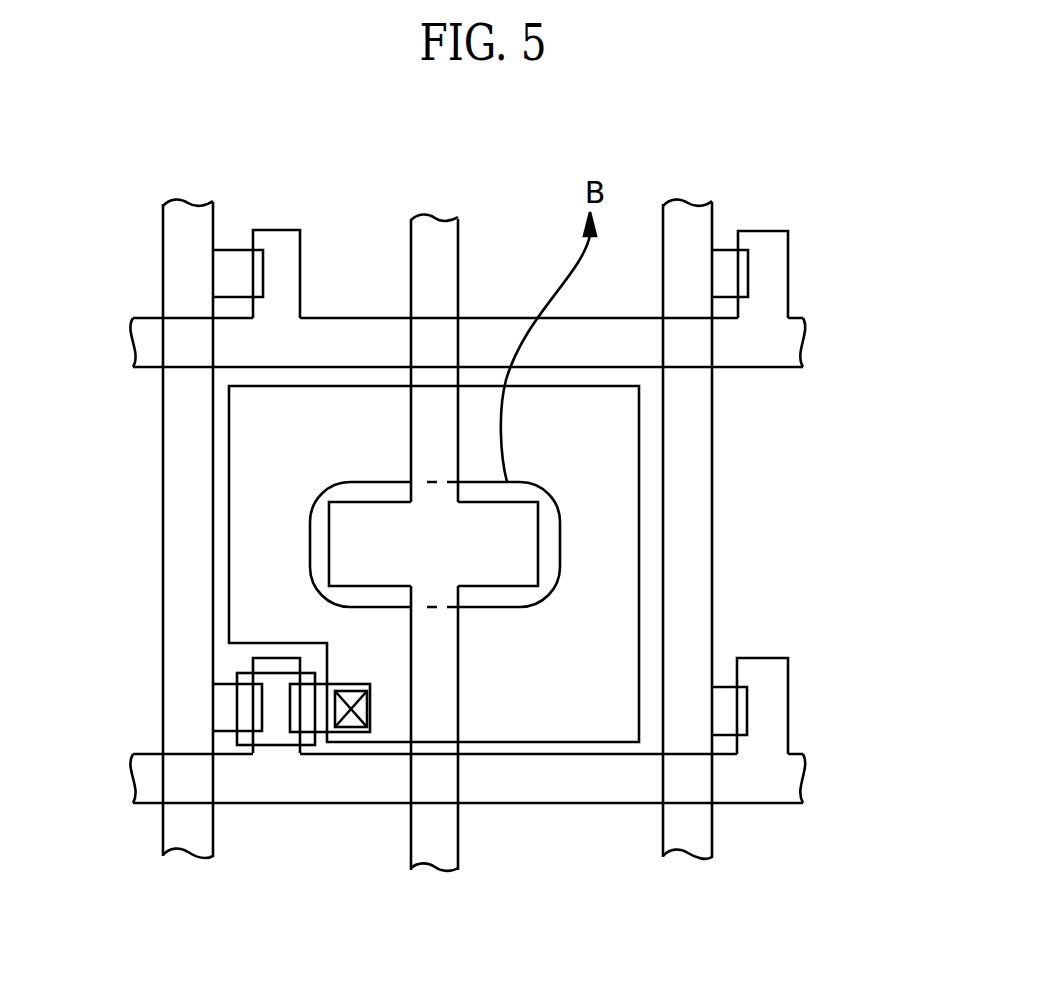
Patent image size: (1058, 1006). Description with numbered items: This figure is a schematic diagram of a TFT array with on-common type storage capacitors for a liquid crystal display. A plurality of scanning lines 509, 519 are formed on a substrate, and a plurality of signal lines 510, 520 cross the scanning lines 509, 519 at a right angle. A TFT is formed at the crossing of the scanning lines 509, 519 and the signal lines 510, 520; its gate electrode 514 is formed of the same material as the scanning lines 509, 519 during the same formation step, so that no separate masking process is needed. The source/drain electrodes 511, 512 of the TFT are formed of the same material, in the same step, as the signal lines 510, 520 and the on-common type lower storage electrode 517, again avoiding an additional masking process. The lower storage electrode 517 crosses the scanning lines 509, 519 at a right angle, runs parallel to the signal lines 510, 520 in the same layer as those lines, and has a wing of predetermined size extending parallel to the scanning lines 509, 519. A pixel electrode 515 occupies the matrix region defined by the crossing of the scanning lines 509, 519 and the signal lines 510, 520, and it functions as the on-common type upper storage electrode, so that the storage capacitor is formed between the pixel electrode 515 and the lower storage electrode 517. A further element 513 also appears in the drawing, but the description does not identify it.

The scanning line 509 is at (783, 342).
The signal line 510 is at (187, 838).
The source/drain electrode 511 is at (260, 730).
The source/drain electrode 512 is at (312, 723).
The semiconductor layer 513 is at (233, 677).
The gate electrode 514 is at (258, 662).
The pixel electrode 515 is at (632, 470).
The lower storage electrode 517 is at (473, 588).
The scanning line 519 is at (763, 778).
The signal line 520 is at (690, 843).